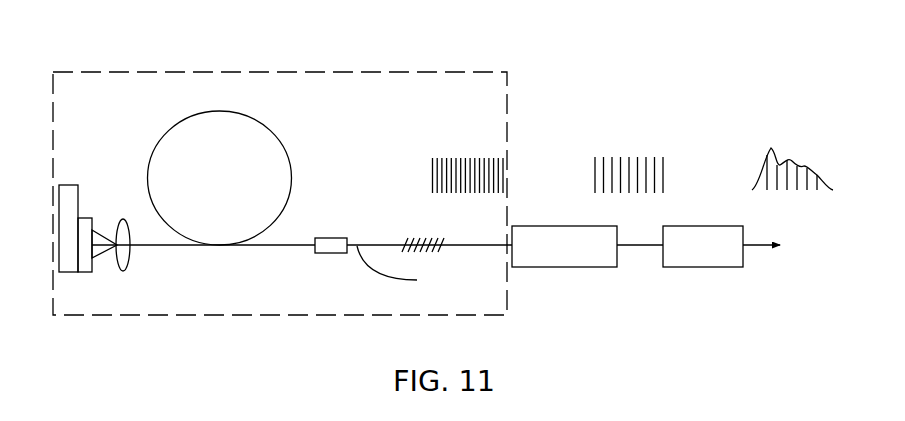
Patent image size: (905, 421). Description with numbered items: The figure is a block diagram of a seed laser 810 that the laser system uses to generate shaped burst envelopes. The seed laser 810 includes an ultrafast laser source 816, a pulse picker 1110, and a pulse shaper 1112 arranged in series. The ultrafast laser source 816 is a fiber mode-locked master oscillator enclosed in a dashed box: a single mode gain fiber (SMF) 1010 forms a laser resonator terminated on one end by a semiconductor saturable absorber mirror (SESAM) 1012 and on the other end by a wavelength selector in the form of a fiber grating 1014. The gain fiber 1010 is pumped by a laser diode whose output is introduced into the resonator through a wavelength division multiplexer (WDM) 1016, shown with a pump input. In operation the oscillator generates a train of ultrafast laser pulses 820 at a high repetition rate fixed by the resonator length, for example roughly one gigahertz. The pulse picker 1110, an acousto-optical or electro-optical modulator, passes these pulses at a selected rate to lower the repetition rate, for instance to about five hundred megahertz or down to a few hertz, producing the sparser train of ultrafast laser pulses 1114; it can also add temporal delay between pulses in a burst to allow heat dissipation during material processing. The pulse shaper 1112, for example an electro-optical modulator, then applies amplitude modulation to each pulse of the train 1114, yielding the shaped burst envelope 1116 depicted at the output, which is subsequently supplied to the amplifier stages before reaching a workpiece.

The seed laser 810 is at (490, 46).
The ultrafast laser source 816 is at (250, 72).
The train of ultrafast laser pulses 820 is at (470, 136).
The single mode gain fiber (SMF) 1010 is at (273, 132).
The semiconductor saturable absorber mirror (SESAM) 1012 is at (73, 185).
The fiber grating 1014 is at (441, 254).
The wavelength division multiplexer (WDM) 1016 is at (330, 238).
The pulse picker 1110 is at (593, 226).
The pulse shaper 1112 is at (670, 226).
The train of ultrafast laser pulses 1114 is at (625, 134).
The burst envelope 1116 is at (770, 130).